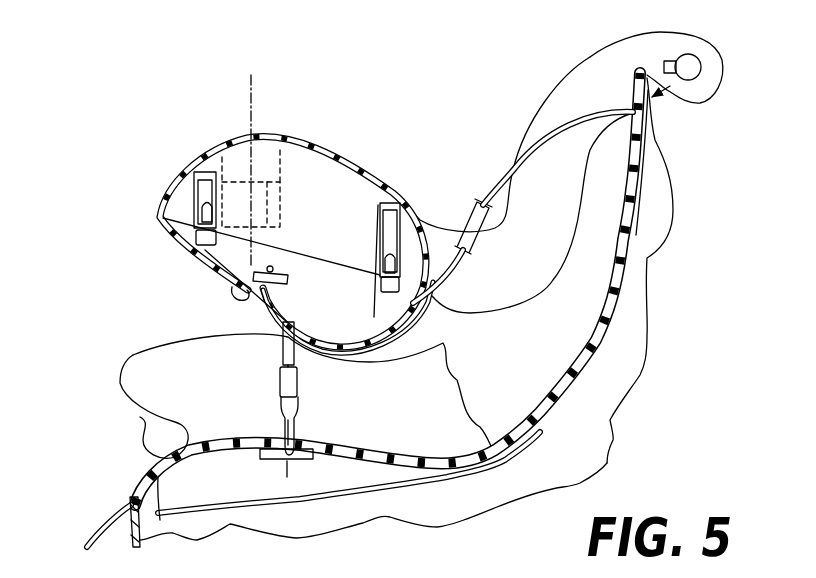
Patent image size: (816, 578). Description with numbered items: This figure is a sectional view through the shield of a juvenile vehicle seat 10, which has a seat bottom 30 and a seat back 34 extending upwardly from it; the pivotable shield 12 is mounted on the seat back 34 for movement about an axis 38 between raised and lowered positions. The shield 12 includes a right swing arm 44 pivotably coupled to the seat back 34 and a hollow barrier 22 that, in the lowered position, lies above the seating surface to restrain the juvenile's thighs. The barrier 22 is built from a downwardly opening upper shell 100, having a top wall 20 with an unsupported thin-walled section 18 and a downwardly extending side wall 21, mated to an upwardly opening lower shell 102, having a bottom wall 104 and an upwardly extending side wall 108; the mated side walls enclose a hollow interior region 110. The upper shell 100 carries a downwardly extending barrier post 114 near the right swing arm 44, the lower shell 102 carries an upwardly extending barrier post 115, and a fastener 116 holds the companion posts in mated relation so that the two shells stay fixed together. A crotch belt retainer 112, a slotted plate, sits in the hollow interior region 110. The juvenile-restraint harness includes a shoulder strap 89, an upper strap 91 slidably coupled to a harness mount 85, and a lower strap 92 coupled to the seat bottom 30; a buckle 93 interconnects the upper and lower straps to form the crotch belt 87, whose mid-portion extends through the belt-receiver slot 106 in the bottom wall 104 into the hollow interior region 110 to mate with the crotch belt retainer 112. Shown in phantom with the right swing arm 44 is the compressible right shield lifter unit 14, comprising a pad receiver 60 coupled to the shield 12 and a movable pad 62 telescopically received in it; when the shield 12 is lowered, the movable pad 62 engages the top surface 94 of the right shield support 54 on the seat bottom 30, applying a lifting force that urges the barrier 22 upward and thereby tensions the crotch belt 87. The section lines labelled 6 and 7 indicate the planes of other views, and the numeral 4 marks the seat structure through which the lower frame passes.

The seat back frame lower cross member 4 is at (223, 443).
The section line 6 is at (300, 108).
The section line 7 is at (300, 83).
The juvenile vehicle seat 10 is at (547, 73).
The pivotable shield 12 is at (558, 281).
The right shield lifter unit 14 is at (235, 168).
The unsupported thin-walled section 18 is at (307, 157).
The top wall 20 is at (353, 167).
The downwardly extending side wall 21 is at (369, 260).
The hollow barrier 22 is at (167, 183).
The seat bottom 30 is at (130, 502).
The seat back 34 is at (693, 105).
The axis 38 is at (688, 67).
The right swing arm 44 is at (597, 78).
The right shield support 54 is at (133, 355).
The pad receiver 60 is at (267, 165).
The movable pad 62 is at (263, 207).
The harness mount 85 is at (236, 297).
The crotch belt 87 is at (240, 375).
The shoulder strap 89 is at (493, 187).
The upper strap 91 is at (283, 337).
The lower strap 92 is at (300, 430).
The buckle 93 is at (305, 385).
The top surface 94 is at (162, 340).
The upper shell 100 is at (297, 137).
The lower shell 102 is at (165, 235).
The bottom wall 104 is at (172, 250).
The belt-receiver slot 106 is at (290, 278).
The upwardly extending side wall 108 is at (374, 316).
The hollow interior region 110 is at (350, 210).
The crotch belt retainer 112 is at (307, 257).
The downwardly extending barrier post 114 is at (206, 178).
The upwardly extending barrier post 115 is at (207, 270).
The fastener 116 is at (163, 193).